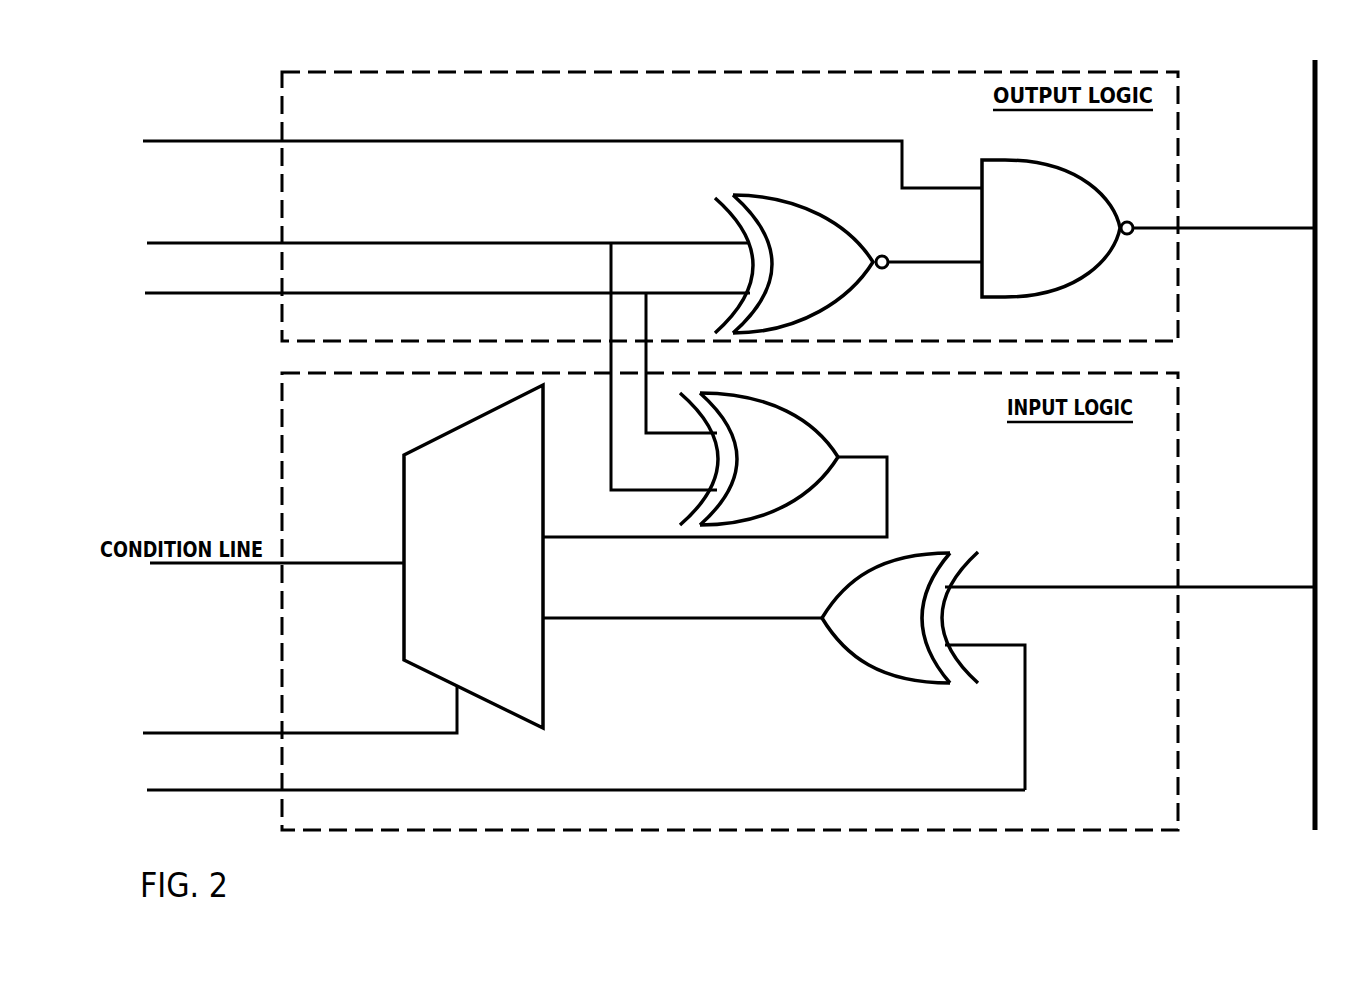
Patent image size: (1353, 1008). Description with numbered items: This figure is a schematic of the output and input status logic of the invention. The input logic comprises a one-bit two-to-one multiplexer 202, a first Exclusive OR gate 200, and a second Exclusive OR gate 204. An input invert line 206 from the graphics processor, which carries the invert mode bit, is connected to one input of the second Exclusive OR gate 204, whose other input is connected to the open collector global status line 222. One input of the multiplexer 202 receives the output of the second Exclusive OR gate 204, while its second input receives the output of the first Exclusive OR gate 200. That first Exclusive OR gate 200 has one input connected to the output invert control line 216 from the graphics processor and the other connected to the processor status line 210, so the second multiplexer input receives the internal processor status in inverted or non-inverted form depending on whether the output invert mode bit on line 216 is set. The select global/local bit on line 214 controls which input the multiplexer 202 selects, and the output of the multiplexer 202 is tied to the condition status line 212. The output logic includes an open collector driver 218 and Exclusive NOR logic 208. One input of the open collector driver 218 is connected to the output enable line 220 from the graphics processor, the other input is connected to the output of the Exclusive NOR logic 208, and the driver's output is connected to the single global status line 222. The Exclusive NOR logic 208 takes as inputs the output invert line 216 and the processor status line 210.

The first Exclusive OR gate 200 is at (798, 474).
The 2:1 multiplexer 202 is at (488, 599).
The second Exclusive OR gate 204 is at (898, 634).
The input invert line 206 is at (548, 789).
The Exclusive NOR logic 208 is at (834, 284).
The processor status line 210 is at (557, 292).
The condition status line 212 is at (305, 469).
The select global/local line 214 is at (377, 732).
The output invert control line 216 is at (590, 242).
The open collector driver 218 is at (1048, 264).
The output enable line 220 is at (470, 140).
The global status line 222 is at (1312, 777).